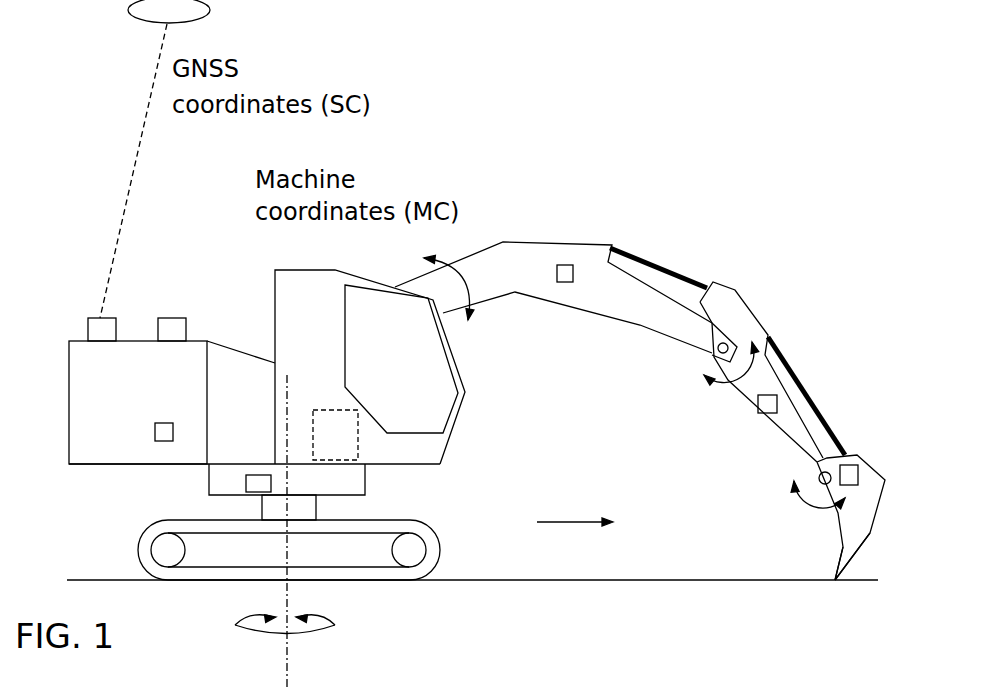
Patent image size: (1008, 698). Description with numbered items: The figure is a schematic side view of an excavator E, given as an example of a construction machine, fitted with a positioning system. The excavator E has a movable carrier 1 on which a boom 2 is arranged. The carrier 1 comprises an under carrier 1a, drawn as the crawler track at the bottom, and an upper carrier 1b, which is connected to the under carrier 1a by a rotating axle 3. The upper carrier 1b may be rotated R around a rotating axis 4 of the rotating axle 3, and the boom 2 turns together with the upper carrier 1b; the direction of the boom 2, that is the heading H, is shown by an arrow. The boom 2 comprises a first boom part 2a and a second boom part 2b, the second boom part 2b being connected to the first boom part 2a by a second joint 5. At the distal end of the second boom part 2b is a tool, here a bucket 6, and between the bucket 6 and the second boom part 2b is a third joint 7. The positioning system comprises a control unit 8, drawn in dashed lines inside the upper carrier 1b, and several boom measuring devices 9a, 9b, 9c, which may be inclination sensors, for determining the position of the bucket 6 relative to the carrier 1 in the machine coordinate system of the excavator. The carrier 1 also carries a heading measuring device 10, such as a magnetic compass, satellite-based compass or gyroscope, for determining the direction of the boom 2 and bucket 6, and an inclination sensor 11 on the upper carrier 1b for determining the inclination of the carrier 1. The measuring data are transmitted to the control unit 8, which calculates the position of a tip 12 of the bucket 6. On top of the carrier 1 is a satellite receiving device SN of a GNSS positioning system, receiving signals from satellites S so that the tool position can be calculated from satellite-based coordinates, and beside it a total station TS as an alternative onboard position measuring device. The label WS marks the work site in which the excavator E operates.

The movable carrier 1 is at (185, 276).
The under carrier 1a is at (175, 547).
The upper carrier 1b is at (220, 473).
The boom 2 is at (595, 168).
The first boom part 2a is at (518, 255).
The second boom part 2b is at (725, 298).
The rotating axle 3 is at (303, 513).
The rotating axis 4 is at (289, 675).
The second joint 5 is at (718, 348).
The bucket 6 is at (865, 503).
The third joint 7 is at (812, 465).
The control unit 8 is at (358, 440).
The boom measuring device 9a is at (568, 285).
The boom measuring device 9b is at (768, 403).
The boom measuring device 9c is at (850, 477).
The heading measuring device 10 is at (260, 483).
The inclination sensor 11 is at (163, 423).
The tip 12 is at (832, 578).
The satellites S is at (150, 14).
The satellite receiving device SN is at (98, 330).
The total station TS is at (172, 330).
The excavator E is at (425, 100).
The work site WS is at (543, 133).
The heading H is at (575, 509).
The rotation R is at (282, 640).